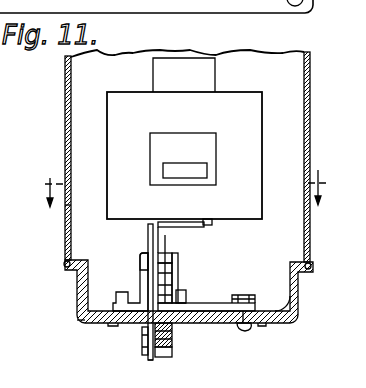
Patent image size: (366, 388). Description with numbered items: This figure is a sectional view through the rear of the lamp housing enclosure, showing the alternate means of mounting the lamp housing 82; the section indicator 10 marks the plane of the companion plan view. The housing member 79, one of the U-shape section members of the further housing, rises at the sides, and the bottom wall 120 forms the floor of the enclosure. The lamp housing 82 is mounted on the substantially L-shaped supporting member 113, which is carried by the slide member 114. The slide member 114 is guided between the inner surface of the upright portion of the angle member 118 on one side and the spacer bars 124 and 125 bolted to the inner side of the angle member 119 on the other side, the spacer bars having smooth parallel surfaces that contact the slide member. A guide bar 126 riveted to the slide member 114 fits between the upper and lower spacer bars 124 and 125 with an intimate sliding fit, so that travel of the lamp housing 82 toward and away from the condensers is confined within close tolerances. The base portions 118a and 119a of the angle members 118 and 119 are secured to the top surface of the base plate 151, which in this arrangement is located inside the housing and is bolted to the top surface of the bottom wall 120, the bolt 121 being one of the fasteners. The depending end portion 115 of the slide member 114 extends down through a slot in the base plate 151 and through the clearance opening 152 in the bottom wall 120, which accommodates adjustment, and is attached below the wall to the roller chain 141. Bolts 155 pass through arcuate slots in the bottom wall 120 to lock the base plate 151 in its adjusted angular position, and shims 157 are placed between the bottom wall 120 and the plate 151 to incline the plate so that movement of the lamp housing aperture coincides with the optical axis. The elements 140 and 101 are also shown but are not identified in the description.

The lamp housing 82 is at (264, 124).
The housing member 79 is at (66, 162).
The section line 10 is at (182, 188).
The spacer bar 124 is at (36, 213).
The slide member 114 is at (148, 237).
The supporting member 113 is at (213, 225).
The angle member 118 is at (139, 283).
The base portion 118a is at (139, 264).
The bolt 121 is at (178, 252).
The angle member 119 is at (174, 267).
The guide bar 126 is at (178, 281).
The spacer bar 125 is at (186, 293).
The base plate 151 is at (238, 298).
The bottom wall 120 is at (292, 307).
The shims 157 is at (261, 326).
The bolts 155 is at (242, 332).
The clearance opening 152 is at (170, 324).
The nut 140 is at (172, 358).
The roller chain 141 is at (158, 358).
The end portion 115 is at (150, 344).
The base portion 119a is at (187, 310).
The frame 101 is at (42, 350).